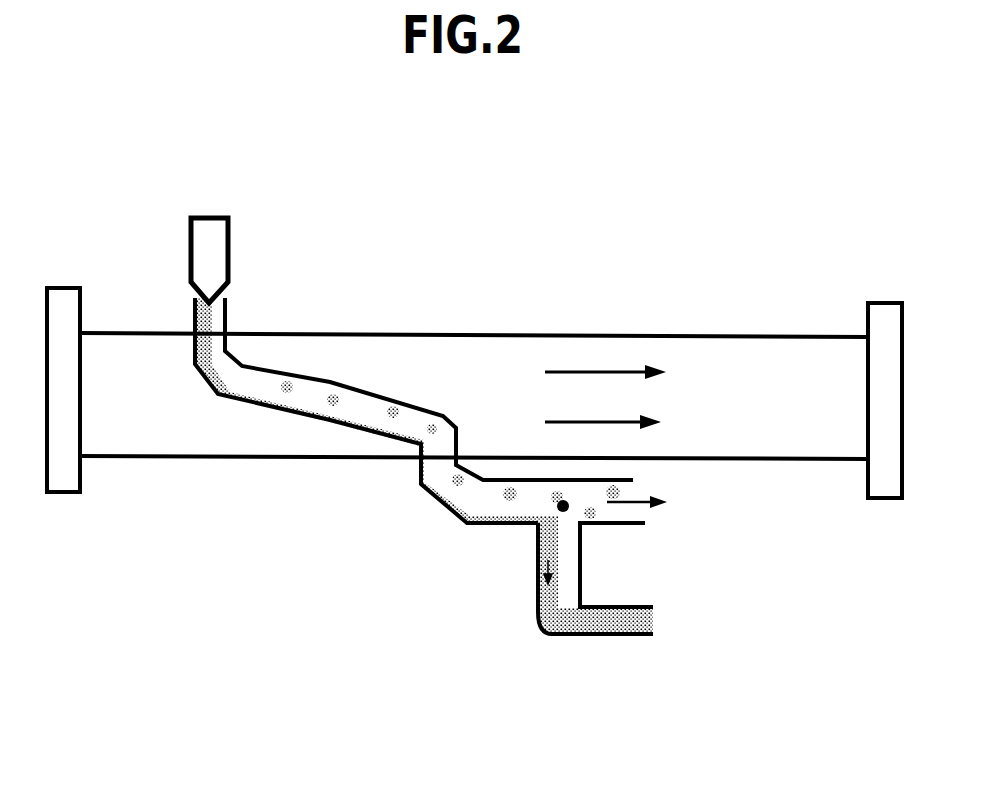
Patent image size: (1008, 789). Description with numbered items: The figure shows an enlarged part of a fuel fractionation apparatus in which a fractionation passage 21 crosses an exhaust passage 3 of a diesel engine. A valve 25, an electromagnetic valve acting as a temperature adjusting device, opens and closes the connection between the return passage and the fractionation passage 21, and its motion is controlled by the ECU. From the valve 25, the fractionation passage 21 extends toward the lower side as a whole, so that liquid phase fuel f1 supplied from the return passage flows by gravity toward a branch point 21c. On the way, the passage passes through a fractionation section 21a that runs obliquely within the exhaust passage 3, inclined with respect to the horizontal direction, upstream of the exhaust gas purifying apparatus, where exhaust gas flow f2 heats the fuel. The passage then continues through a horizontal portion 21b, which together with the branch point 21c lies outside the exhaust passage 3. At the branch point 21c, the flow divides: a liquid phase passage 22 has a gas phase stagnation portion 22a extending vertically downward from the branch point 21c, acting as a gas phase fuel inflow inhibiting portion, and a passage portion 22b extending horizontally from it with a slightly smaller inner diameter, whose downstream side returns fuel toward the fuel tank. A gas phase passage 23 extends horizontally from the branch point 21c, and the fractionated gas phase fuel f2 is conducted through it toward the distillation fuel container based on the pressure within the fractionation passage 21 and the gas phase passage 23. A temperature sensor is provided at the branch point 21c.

The exhaust passage 3 is at (488, 350).
The valve 25 is at (215, 238).
The fractionation passage 21 is at (266, 374).
The fractionation section 21a is at (303, 413).
The horizontal portion 21b is at (498, 488).
The branch point 21c is at (553, 508).
The liquid phase passage 22 is at (547, 633).
The gas phase stagnation portion 22a is at (562, 593).
The passage portion 22b is at (623, 610).
The gas phase passage 23 is at (618, 515).
The liquid phase fuel f1 is at (226, 399).
The gas phase fuel f2 is at (388, 408).